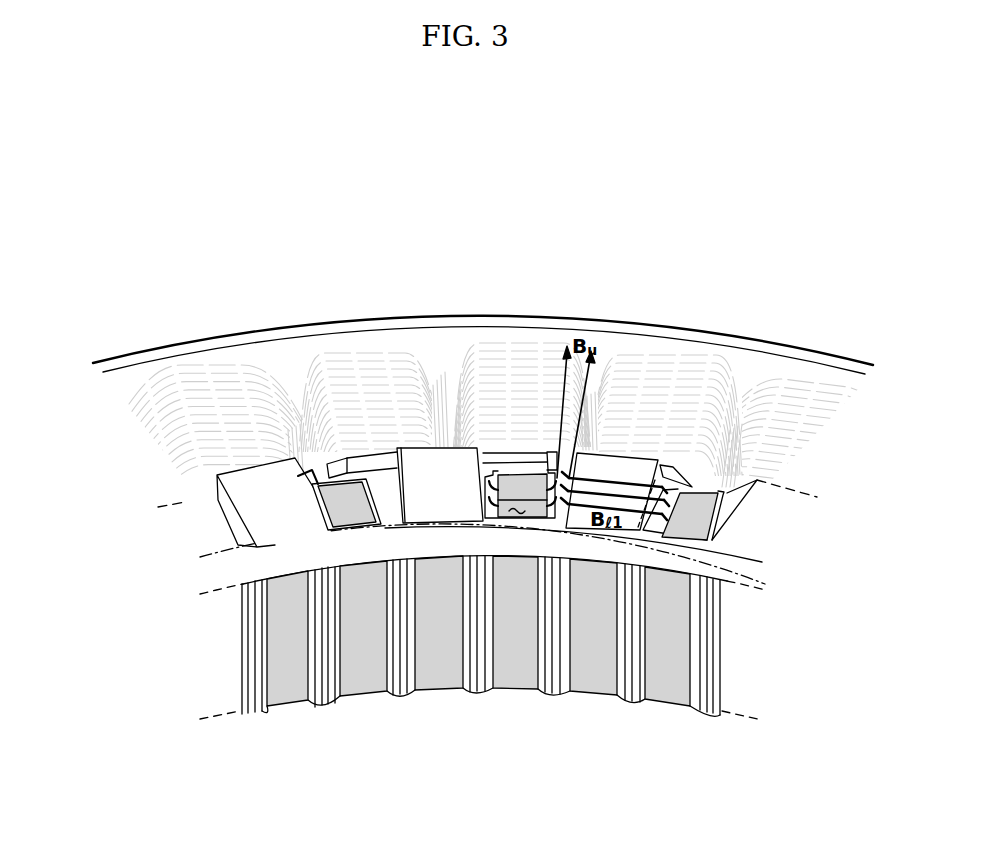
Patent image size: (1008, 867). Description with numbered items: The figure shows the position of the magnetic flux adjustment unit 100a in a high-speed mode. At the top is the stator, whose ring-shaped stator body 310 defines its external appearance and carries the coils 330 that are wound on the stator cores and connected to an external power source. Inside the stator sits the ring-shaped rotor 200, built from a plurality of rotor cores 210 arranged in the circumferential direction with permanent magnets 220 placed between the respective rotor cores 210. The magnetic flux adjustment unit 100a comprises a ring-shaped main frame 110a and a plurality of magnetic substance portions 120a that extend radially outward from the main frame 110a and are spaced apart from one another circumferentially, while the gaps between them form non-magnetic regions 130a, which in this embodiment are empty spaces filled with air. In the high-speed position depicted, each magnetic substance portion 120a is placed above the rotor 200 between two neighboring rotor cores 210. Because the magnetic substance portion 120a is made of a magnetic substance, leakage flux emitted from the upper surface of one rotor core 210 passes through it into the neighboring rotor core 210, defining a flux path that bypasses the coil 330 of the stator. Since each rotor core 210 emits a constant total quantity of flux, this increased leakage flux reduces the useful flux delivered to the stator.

The stator body 310 is at (428, 333).
The coils 330 is at (353, 372).
The rotor 200 is at (100, 520).
The rotor cores 210 is at (387, 512).
The permanent magnets 220 is at (315, 485).
The magnetic flux adjustment unit 100a is at (430, 775).
The main frame 110a is at (487, 520).
The magnetic substance portions 120a is at (442, 500).
The non-magnetic regions 130a is at (515, 513).